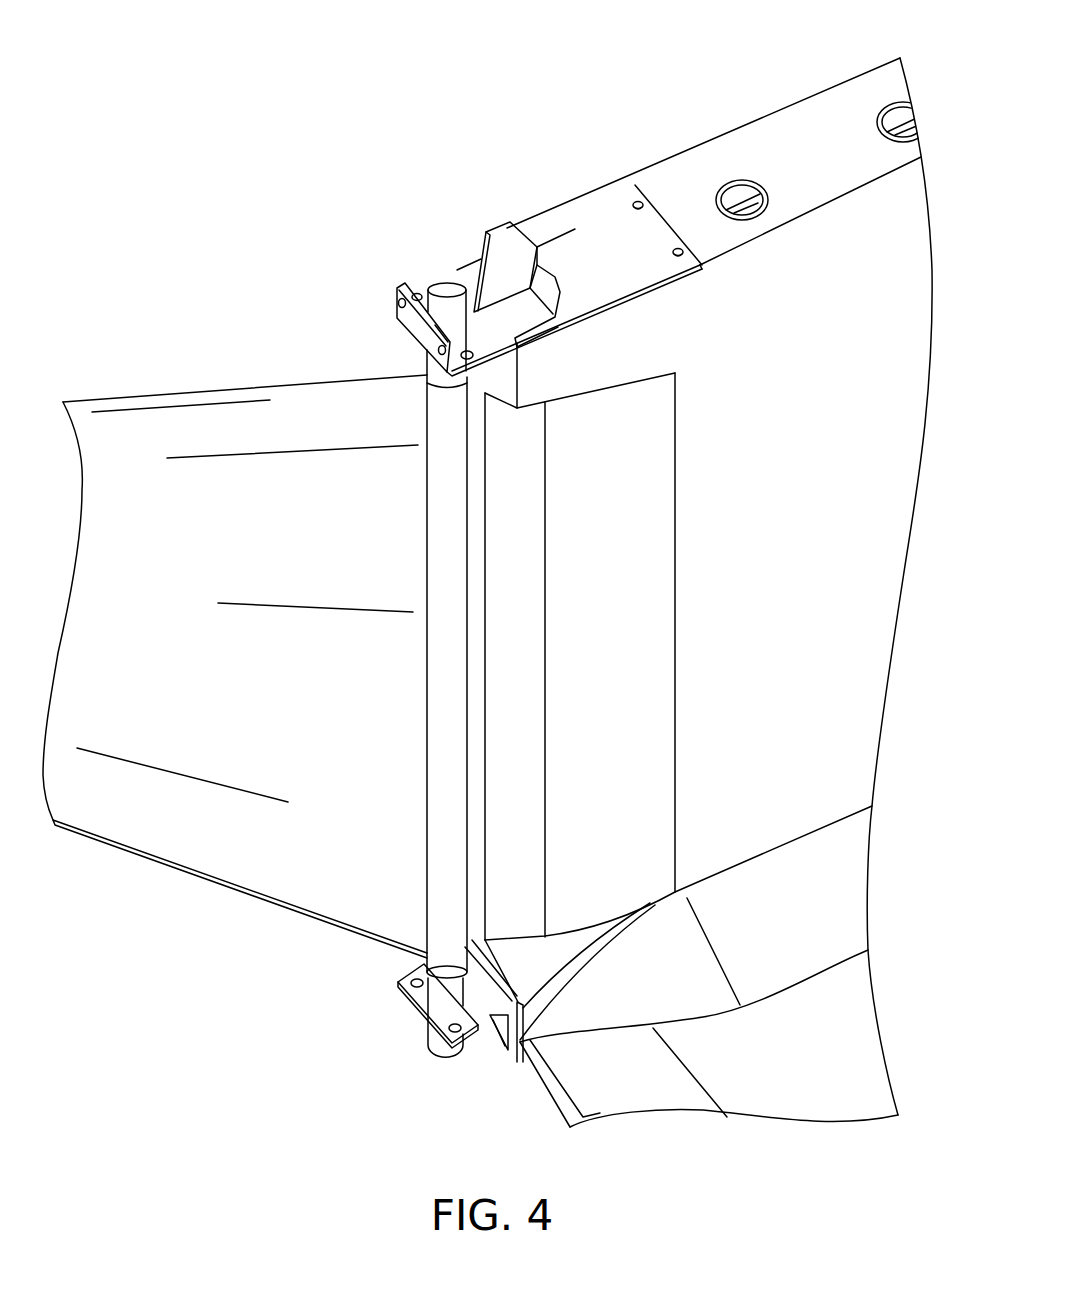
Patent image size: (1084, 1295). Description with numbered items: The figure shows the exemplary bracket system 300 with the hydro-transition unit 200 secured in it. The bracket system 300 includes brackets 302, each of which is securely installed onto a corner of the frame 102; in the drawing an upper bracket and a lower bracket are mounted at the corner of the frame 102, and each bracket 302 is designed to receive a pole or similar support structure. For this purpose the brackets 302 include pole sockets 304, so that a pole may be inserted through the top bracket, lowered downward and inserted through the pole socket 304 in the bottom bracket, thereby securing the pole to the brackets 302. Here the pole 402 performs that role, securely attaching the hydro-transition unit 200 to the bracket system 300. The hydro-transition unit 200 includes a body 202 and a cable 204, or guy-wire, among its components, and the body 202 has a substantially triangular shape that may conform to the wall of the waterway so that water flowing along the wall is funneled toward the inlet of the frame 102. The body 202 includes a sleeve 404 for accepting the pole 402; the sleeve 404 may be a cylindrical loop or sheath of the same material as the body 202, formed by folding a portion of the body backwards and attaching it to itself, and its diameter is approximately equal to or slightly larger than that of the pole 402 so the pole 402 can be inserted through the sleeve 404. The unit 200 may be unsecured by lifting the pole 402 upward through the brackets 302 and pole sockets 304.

The frame 102 is at (868, 570).
The hydro-transition unit 200 is at (204, 262).
The body 202 is at (290, 398).
The cable 204 is at (145, 857).
The bracket system 300 is at (541, 68).
The bracket 302 is at (448, 282).
The pole socket 304 is at (478, 340).
The pole 402 is at (428, 368).
The sleeve 404 is at (434, 652).